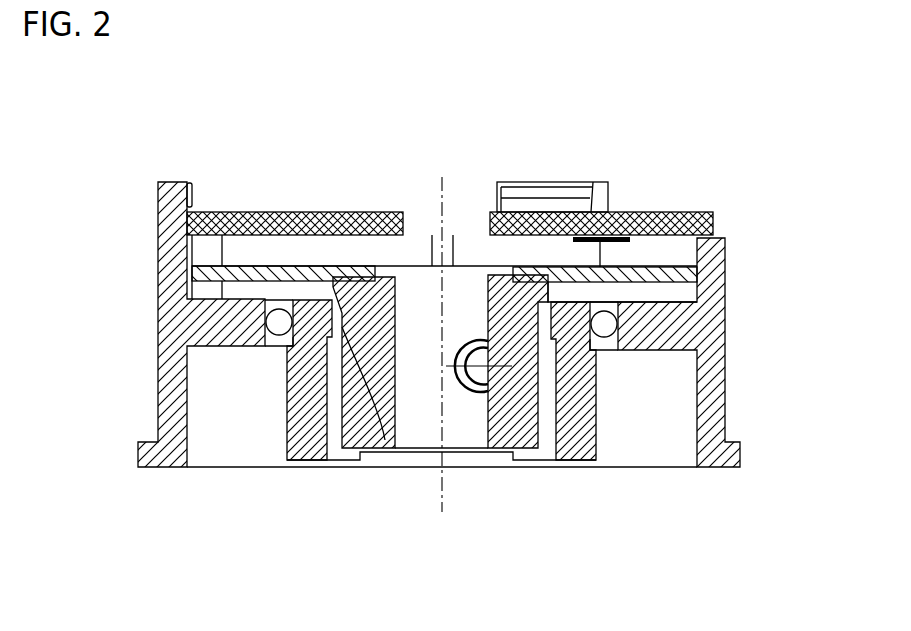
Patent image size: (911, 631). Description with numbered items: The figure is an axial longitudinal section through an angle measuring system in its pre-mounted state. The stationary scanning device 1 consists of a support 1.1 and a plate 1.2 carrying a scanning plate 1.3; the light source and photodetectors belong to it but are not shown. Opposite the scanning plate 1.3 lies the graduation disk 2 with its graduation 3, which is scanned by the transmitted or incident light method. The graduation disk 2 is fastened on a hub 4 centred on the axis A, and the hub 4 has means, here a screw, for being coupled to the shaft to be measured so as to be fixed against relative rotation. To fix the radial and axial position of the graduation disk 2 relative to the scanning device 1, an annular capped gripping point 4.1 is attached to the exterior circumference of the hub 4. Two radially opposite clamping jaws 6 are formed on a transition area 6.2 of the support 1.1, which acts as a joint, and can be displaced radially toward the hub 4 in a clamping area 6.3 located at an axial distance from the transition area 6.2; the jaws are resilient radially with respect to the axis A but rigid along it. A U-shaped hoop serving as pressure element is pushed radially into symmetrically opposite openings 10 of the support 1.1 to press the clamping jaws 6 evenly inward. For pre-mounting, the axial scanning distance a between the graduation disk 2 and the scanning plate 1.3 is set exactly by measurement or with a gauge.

The scanning device 1 is at (727, 225).
The support 1.1 is at (726, 298).
The plate 1.2 is at (680, 232).
The scanning plate 1.3 is at (617, 226).
The graduation disk 2 is at (698, 266).
The graduation 3 is at (336, 248).
The hub 4 is at (530, 412).
The annular capped gripping point 4.1 is at (385, 440).
The clamping jaws 6 is at (287, 397).
The transition area 6.2 is at (283, 450).
The clamping area 6.3 is at (280, 343).
The openings 10 is at (277, 323).
The axis A is at (450, 200).
The scanning distance a is at (601, 252).